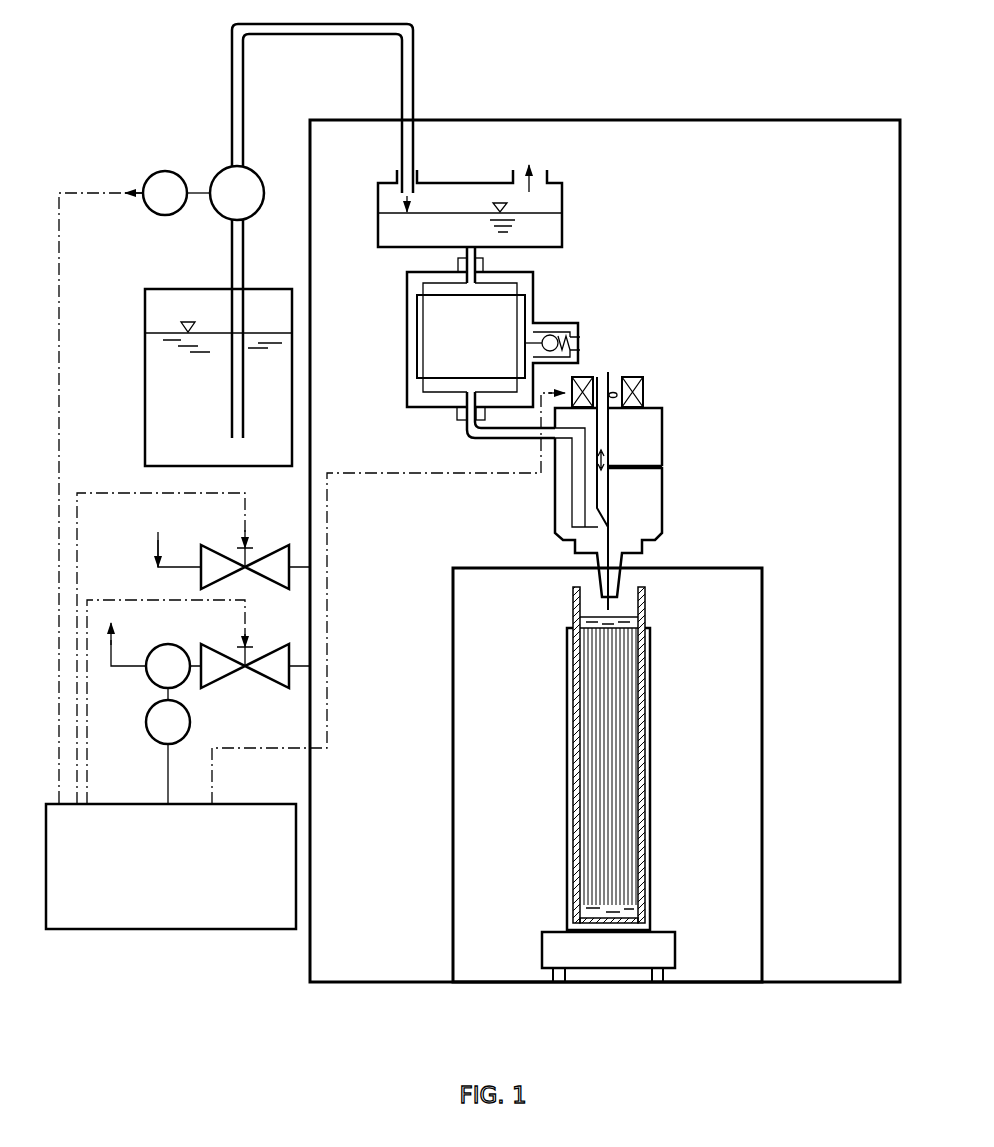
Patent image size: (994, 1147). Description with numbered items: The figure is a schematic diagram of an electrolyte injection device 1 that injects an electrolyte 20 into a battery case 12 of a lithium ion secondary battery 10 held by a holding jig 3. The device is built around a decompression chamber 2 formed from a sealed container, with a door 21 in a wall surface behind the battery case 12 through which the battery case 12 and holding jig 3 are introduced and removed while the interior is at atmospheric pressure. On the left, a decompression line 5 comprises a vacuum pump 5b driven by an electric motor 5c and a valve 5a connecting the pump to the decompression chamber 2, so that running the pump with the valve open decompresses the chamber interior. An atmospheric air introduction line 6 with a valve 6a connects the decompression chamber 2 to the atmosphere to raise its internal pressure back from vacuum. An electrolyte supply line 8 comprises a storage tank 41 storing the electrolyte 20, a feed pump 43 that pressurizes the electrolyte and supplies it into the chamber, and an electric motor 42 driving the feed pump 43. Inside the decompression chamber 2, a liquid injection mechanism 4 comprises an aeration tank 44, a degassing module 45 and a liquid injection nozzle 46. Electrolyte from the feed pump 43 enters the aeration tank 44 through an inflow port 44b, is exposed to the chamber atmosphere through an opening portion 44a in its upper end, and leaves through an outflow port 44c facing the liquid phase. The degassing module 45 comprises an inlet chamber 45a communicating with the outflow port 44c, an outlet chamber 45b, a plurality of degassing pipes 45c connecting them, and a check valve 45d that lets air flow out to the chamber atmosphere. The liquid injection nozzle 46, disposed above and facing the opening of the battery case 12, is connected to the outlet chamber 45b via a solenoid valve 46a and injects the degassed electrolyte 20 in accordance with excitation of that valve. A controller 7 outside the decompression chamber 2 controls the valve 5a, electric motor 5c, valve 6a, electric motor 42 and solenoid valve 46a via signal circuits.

The electrolyte injection device 1 is at (608, 66).
The decompression chamber 2 is at (655, 120).
The holding jig 3 is at (650, 817).
The liquid injection mechanism 4 is at (477, 138).
The decompression line 5 is at (198, 666).
The valve 5a is at (268, 656).
The vacuum pump 5b is at (172, 645).
The electric motor 5c is at (192, 722).
The atmospheric air introduction line 6 is at (193, 614).
The valve 6a is at (210, 560).
The controller 7 is at (305, 561).
The electrolyte supply line 8 is at (263, 231).
The lithium ion secondary battery 10 is at (639, 784).
The battery case 12 is at (648, 604).
The electrolyte 20 is at (576, 622).
The door 21 is at (438, 844).
The storage tank 41 is at (168, 288).
The electric motor 42 is at (152, 172).
The feed pump 43 is at (225, 168).
The aeration tank 44 is at (520, 209).
The opening portion 44a is at (538, 172).
The inflow port 44b is at (421, 185).
The outflow port 44c is at (488, 262).
The degassing module 45 is at (502, 349).
The inlet chamber 45a is at (432, 292).
The outlet chamber 45b is at (432, 386).
The degassing pipes 45c is at (432, 344).
The check valve 45d is at (602, 330).
The liquid injection nozzle 46 is at (654, 468).
The solenoid valve 46a is at (632, 382).